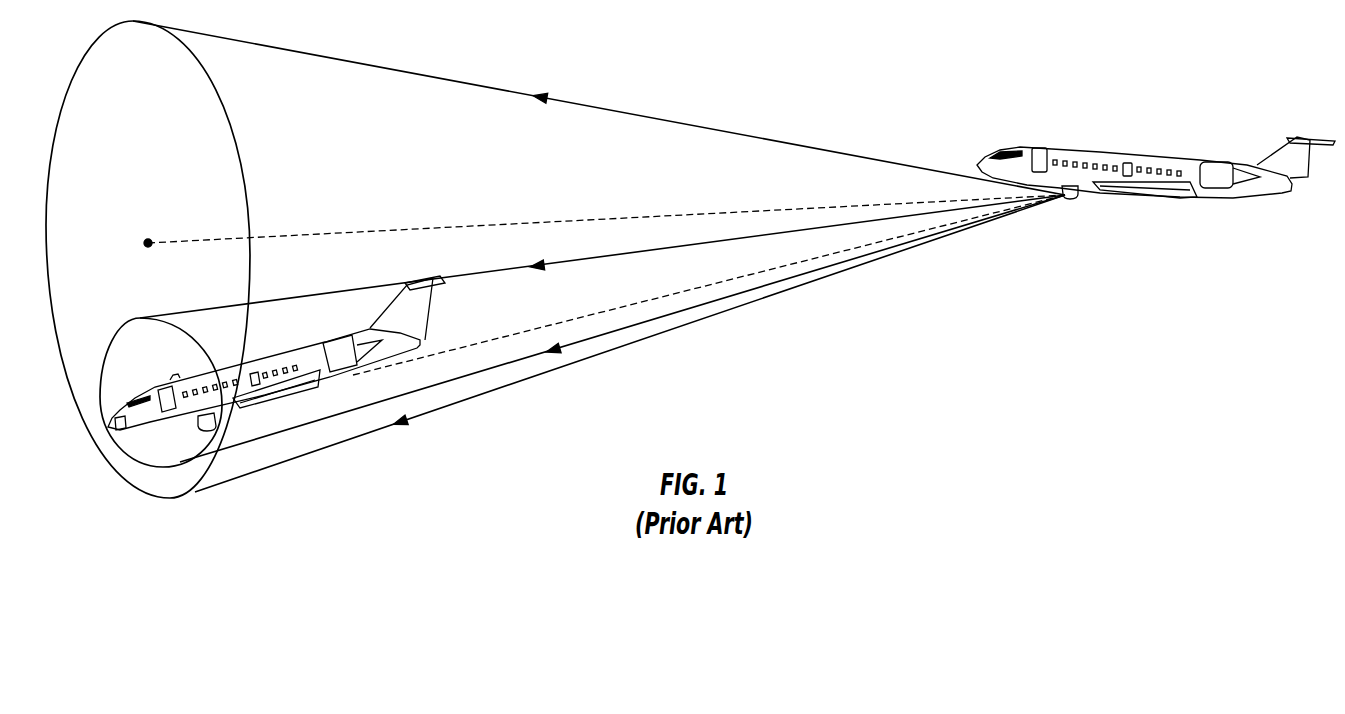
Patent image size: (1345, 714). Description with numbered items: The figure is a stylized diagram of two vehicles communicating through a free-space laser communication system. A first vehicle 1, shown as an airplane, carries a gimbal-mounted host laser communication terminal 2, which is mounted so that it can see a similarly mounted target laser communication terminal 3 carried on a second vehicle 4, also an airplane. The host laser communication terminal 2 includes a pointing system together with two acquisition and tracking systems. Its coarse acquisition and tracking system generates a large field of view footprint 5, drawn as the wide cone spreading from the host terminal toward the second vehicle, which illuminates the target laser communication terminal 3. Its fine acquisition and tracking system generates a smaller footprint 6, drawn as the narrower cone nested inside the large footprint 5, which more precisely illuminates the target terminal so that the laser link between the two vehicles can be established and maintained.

The first vehicle 1 is at (1156, 151).
The host laser communication terminal 2 is at (1091, 216).
The target laser communication terminal 3 is at (276, 394).
The second vehicle 4 is at (156, 357).
The large field of view footprint 5 is at (555, 259).
The smaller footprint 6 is at (582, 384).